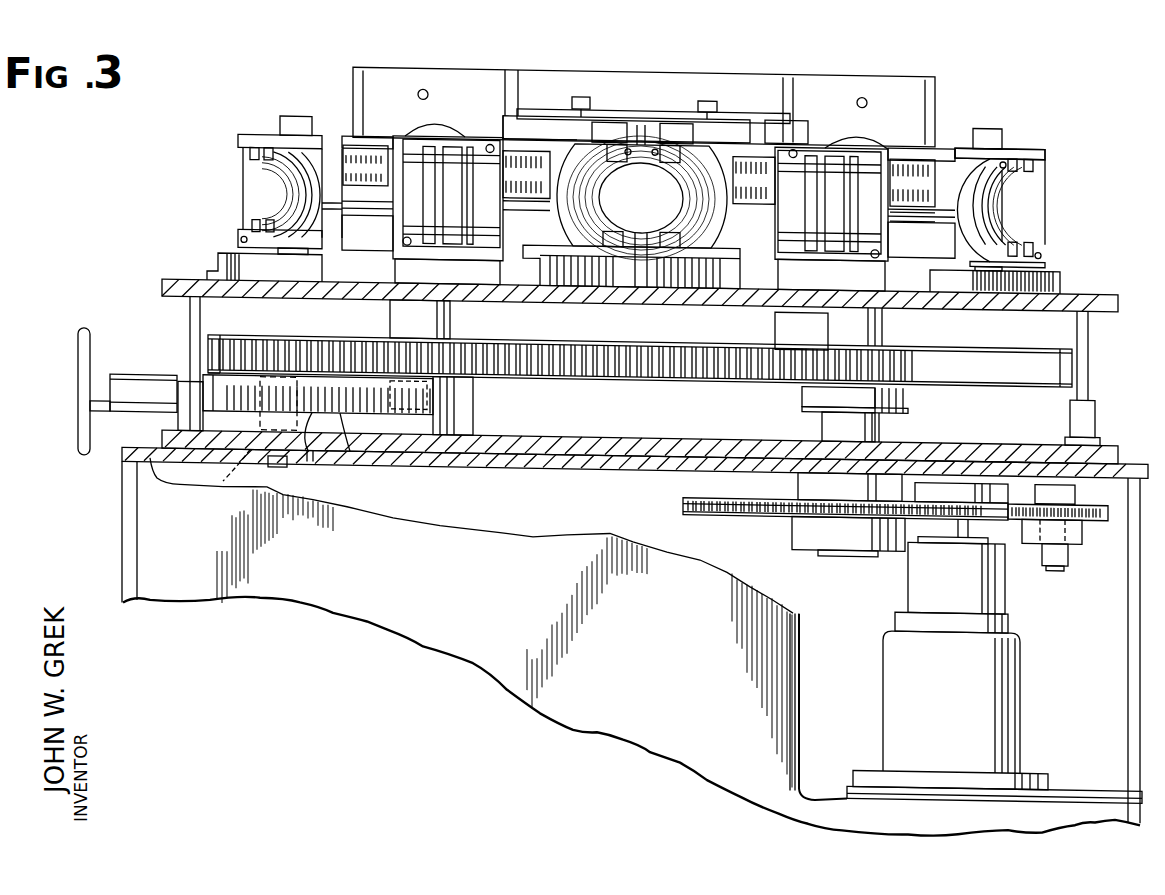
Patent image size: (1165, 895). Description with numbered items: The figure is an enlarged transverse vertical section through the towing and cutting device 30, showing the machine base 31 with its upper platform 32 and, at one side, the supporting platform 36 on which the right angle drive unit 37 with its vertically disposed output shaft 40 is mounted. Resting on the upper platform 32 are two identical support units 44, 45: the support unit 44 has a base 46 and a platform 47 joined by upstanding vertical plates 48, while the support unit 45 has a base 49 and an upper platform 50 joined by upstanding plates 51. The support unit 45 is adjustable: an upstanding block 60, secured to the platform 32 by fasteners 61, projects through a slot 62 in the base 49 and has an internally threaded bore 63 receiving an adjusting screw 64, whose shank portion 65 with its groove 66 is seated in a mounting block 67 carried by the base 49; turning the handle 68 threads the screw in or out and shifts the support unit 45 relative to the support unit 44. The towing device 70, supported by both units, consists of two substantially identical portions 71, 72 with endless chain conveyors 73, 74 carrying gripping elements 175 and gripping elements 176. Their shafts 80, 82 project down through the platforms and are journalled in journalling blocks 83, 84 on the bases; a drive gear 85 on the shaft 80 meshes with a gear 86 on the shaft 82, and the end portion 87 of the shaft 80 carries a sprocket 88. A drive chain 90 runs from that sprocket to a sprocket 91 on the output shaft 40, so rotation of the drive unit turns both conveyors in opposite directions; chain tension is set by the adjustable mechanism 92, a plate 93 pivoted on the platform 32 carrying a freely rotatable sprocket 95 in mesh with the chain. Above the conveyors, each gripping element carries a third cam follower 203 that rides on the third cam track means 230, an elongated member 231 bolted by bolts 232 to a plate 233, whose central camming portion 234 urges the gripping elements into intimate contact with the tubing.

The towing and cutting device 30 is at (465, 700).
The machine base 31 is at (360, 612).
The upper platform 32 is at (520, 470).
The supporting platform 36 is at (1035, 772).
The right angle drive unit 37 is at (1000, 648).
The output shaft 40 is at (955, 530).
The support unit 44 is at (1097, 290).
The support unit 45 is at (183, 282).
The base 46 is at (956, 450).
The platform 47 is at (963, 308).
The upstanding vertical plates 48 is at (1087, 360).
The base 49 is at (548, 440).
The upper platform 50 is at (495, 302).
The upstanding plates 51 is at (198, 326).
The upstanding block 60 is at (305, 456).
The fasteners 61 is at (283, 473).
The slot 62 is at (220, 486).
The internally threaded bore 63 is at (262, 416).
The adjusting screw 64 is at (353, 456).
The shank portion 65 is at (130, 384).
The groove 66 is at (180, 388).
The mounting block 67 is at (176, 424).
The handle 68 is at (82, 410).
The towing device 70 is at (978, 115).
The portion 71 is at (1048, 150).
The portion 72 is at (272, 134).
The endless chain conveyor 73 is at (782, 190).
The endless chain conveyor 74 is at (503, 187).
The shaft 80 is at (878, 324).
The shaft 82 is at (410, 318).
The journalling block 83 is at (905, 440).
The journalling block 84 is at (470, 432).
The drive gear 85 is at (767, 375).
The gear 86 is at (565, 368).
The end portion 87 is at (835, 553).
The sprocket 88 is at (790, 515).
The drive chain 90 is at (718, 508).
The sprocket 91 is at (1006, 485).
The adjustable mechanism 92 is at (1082, 558).
The plate 93 is at (1072, 481).
The freely rotatable sprocket 95 is at (1082, 528).
The gripping elements 175 is at (1005, 208).
The gripping elements 176 is at (408, 226).
The third cam follower 203 is at (607, 123).
The third cam track means 230 is at (742, 128).
The elongated member 231 is at (566, 130).
The bolts 232 is at (584, 98).
The plate 233 is at (652, 111).
The central camming portion 234 is at (583, 121).